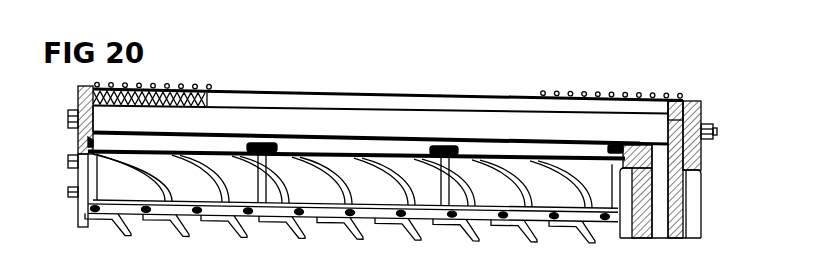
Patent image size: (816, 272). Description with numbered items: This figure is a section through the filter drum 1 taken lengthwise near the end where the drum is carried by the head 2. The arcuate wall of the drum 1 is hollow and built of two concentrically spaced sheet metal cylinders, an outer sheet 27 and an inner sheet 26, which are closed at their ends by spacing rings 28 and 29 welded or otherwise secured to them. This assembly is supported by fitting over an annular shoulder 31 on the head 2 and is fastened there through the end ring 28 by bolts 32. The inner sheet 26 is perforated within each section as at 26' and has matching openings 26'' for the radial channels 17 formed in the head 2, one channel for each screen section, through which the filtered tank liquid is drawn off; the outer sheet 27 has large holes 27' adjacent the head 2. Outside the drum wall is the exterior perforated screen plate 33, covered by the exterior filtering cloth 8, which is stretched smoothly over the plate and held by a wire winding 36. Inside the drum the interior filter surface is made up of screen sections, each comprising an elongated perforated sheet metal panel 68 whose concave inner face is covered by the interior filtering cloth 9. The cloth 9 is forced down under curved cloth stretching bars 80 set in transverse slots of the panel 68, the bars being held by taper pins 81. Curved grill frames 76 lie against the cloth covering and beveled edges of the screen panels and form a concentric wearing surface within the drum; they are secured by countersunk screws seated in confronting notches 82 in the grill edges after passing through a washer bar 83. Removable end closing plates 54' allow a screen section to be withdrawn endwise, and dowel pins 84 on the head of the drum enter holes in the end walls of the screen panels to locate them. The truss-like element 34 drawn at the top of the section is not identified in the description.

The drum 1 is at (383, 125).
The head 2 is at (701, 199).
The exterior filtering cloth 8 is at (460, 92).
The interior filtering cloth 9 is at (521, 161).
The radial channels 17 is at (658, 213).
The inner sheet metal cylinder 26 is at (244, 138).
The perforations of sheet 26 26' is at (366, 132).
The matching openings 26'' is at (654, 137).
The outer sheet metal cylinder 27 is at (380, 89).
The large holes 27' is at (669, 153).
The end spacing ring 28 is at (668, 125).
The spacing ring 29 is at (94, 119).
The annular shoulder 31 is at (702, 158).
The bolts 32 is at (717, 131).
The exterior perforated screen plate 33 is at (487, 93).
The truss 34 is at (213, 97).
The wire winding 36 is at (623, 96).
The end closing plate 54' is at (61, 156).
The screen panel 68 is at (536, 158).
The grill frames 76 is at (386, 183).
The cloth stretching bars 80 is at (264, 198).
The taper pins 81 is at (460, 149).
The notches 82 is at (449, 222).
The washer bar 83 is at (98, 137).
The dowel pins 84 is at (608, 149).